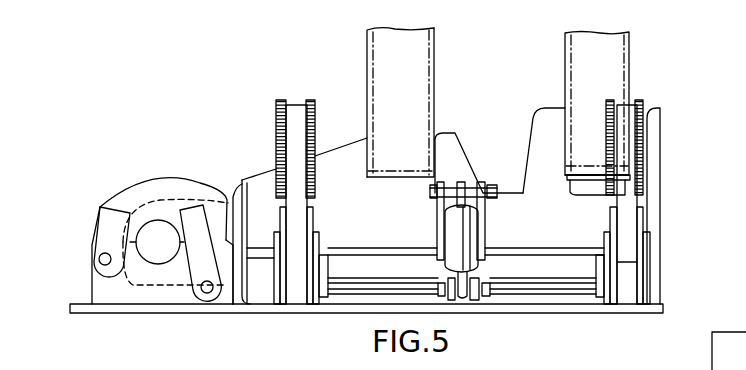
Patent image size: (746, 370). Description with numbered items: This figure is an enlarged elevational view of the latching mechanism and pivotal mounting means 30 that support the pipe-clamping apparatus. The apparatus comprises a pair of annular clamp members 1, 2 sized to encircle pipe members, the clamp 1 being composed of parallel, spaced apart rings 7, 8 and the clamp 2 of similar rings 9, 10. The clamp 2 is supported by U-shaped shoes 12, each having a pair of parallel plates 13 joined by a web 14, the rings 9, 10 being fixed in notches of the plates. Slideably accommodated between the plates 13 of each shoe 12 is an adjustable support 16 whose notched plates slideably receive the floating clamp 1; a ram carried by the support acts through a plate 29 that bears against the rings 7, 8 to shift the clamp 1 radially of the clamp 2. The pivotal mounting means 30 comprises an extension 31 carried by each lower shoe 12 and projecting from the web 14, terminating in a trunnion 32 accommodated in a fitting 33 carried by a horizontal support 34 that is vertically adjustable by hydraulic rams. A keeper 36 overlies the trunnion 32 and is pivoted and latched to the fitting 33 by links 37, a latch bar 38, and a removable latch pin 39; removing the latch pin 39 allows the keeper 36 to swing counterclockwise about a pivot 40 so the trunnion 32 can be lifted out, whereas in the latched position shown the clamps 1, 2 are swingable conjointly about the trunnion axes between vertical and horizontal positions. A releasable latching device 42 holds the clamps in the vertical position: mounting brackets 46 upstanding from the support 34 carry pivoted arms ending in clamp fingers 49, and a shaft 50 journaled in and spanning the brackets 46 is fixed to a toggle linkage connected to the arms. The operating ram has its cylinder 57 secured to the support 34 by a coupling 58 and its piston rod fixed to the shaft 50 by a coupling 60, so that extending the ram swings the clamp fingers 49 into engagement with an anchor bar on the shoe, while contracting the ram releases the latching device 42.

The annular clamp member 1 is at (640, 61).
The annular clamp member 2 is at (401, 97).
The ring 7 is at (631, 42).
The ring 8 is at (565, 58).
The ring 9 is at (435, 47).
The ring 10 is at (367, 58).
The U-shaped shoe 12 is at (347, 128).
The plate 13 is at (268, 183).
The web 14 is at (233, 198).
The adjustable support 16 is at (666, 162).
The plate 29 is at (591, 187).
The pivotal mounting means 30 is at (130, 224).
The extension 31 is at (226, 198).
The trunnion 32 is at (153, 257).
The fitting 33 is at (108, 291).
The horizontal support 34 is at (88, 309).
The keeper 36 is at (128, 203).
The link 37 is at (108, 232).
The latch bar 38 is at (196, 274).
The removable latch pin 39 is at (207, 293).
The pivot 40 is at (99, 262).
The releasable latching device 42 is at (461, 167).
The mounting bracket 46 is at (279, 296).
The clamp finger 49 is at (277, 108).
The shaft 50 is at (373, 268).
The cylinder 57 is at (445, 226).
The coupling 58 is at (491, 309).
The coupling 60 is at (493, 212).